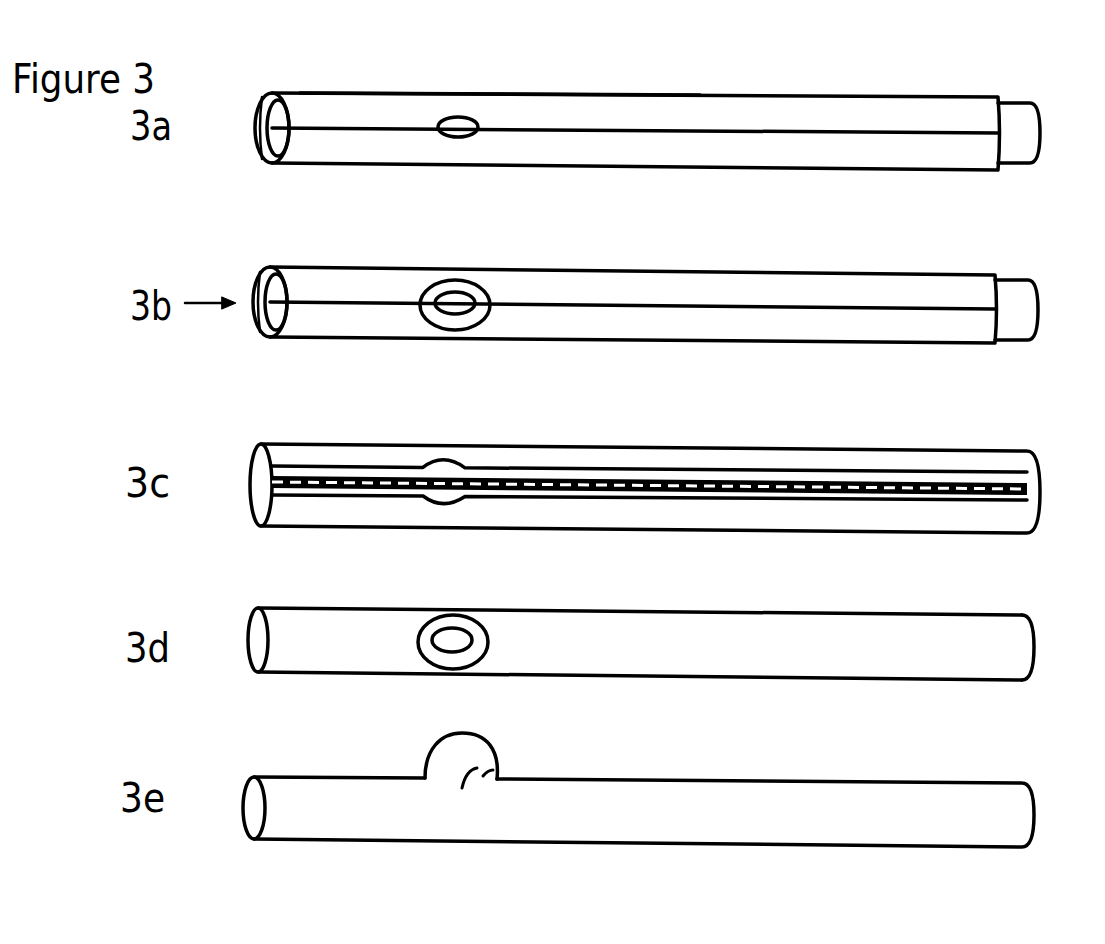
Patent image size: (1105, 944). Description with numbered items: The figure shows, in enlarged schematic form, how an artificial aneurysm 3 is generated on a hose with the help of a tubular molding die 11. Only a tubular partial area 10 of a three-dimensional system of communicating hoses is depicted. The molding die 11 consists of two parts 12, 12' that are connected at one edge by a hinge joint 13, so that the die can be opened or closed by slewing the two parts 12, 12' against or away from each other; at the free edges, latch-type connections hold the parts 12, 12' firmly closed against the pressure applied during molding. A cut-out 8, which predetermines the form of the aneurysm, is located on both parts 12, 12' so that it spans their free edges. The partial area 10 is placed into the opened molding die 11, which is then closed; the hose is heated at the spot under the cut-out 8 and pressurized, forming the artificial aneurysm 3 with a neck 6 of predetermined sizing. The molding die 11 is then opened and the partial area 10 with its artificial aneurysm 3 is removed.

The artificial aneurysm 3 is at (432, 652).
The neck 6 is at (475, 643).
The cut-out 8 is at (458, 130).
The partial area 10 is at (1026, 133).
The molding die 11 is at (907, 177).
The part of the molding die 12 is at (635, 182).
The part of the molding die 12' is at (500, 75).
The hinge joint 13 is at (257, 140).